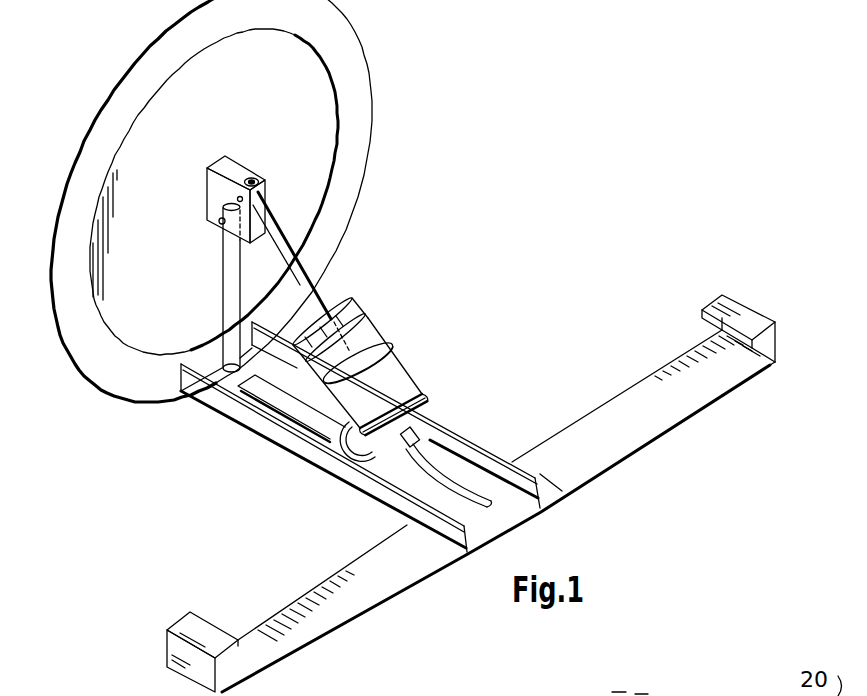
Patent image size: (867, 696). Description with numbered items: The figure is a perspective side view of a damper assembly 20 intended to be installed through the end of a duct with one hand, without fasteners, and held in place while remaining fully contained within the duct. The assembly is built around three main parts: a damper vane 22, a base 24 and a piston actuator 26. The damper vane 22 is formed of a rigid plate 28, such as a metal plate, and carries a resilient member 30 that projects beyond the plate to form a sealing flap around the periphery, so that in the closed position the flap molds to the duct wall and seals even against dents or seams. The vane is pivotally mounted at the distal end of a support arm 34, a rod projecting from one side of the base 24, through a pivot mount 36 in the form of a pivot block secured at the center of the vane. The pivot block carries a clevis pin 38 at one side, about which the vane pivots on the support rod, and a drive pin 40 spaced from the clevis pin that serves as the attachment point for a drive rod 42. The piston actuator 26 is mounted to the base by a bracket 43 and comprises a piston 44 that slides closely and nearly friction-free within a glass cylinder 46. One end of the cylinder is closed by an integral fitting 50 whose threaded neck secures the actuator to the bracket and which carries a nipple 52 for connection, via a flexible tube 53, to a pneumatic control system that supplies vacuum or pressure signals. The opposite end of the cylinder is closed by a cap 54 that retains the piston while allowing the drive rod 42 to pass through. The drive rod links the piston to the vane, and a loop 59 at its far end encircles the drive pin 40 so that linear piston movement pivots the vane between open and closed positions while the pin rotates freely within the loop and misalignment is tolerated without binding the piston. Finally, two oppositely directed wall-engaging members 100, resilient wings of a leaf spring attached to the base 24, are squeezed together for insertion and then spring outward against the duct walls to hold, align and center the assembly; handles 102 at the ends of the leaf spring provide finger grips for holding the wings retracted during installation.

The damper assembly 20 is at (567, 180).
The damper vane 22 is at (393, 99).
The base 24 is at (245, 421).
The piston actuator 26 is at (410, 331).
The rigid plate 28 is at (328, 133).
The resilient member 30 is at (340, 192).
The support arm 34 is at (230, 300).
The pivot mount 36 is at (217, 182).
The clevis pin 38 is at (218, 228).
The drive pin 40 is at (239, 166).
The drive rod 42 is at (326, 276).
The bracket 43 is at (318, 416).
The piston 44 is at (374, 358).
The cylinder 46 is at (403, 403).
The fitting 50 is at (371, 424).
The nipple 52 is at (420, 437).
The flexible tube 53 is at (558, 488).
The cap 54 is at (362, 304).
The loop 59 is at (259, 189).
The wall-engaging members 100 is at (640, 420).
The handles 102 is at (748, 325).